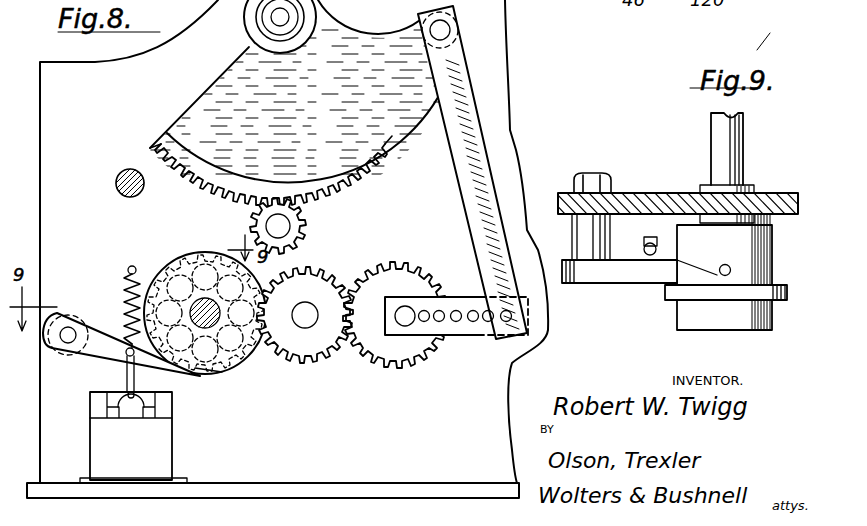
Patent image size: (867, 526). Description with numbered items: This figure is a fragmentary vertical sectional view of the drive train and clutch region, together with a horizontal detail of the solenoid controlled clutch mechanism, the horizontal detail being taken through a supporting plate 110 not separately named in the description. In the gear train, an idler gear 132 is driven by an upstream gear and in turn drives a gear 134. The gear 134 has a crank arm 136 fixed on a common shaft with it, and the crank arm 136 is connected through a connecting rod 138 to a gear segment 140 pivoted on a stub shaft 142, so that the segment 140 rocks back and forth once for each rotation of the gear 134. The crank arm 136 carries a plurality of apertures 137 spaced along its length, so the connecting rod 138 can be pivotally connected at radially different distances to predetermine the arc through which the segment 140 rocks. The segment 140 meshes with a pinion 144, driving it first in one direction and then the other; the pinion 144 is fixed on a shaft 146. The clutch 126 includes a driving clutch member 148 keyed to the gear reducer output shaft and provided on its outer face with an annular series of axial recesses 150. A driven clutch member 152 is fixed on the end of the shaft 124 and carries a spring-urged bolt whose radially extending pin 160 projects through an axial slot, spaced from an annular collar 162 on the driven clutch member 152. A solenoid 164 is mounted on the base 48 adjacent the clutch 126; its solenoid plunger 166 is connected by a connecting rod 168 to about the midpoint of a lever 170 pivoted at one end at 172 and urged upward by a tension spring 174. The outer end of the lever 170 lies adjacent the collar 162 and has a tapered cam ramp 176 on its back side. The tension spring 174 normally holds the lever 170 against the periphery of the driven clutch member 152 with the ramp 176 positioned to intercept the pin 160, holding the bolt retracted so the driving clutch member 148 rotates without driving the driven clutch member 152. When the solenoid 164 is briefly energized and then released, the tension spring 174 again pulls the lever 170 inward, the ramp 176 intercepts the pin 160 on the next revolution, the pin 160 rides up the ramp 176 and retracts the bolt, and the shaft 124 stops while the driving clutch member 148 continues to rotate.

In FIG. 8, the base 48 is at (282, 488).
In FIG. 9, the frame plate 110 is at (622, 158).
In FIG. 8, the shaft 124 is at (333, 261).
In FIG. 9, the shaft 124 is at (687, 140).
In FIG. 8, the clutch 126 is at (255, 370).
In FIG. 9, the clutch 126 is at (780, 262).
In FIG. 8, the idler gear 132 is at (377, 244).
In FIG. 8, the gear 134 is at (400, 421).
In FIG. 8, the crank arm 136 is at (456, 312).
In FIG. 8, the apertures 137 is at (488, 396).
In FIG. 8, the connecting rod 138 is at (567, 138).
In FIG. 8, the gear segment 140 is at (152, 105).
In FIG. 8, the stub shaft 142 is at (298, 82).
In FIG. 8, the pinion 144 is at (376, 220).
In FIG. 8, the shaft 146 is at (240, 227).
In FIG. 9, the driving clutch member 148 is at (628, 353).
In FIG. 8, the axial recesses 150 is at (185, 270).
In FIG. 9, the driven clutch member 152 is at (798, 174).
In FIG. 9, the pin 160 is at (725, 276).
In FIG. 8, the collar 162 is at (123, 232).
In FIG. 9, the collar 162 is at (760, 359).
In FIG. 8, the solenoid 164 is at (240, 463).
In FIG. 8, the solenoid plunger 166 is at (85, 447).
In FIG. 8, the connecting rod 168 is at (97, 377).
In FIG. 8, the lever 170 is at (118, 308).
In FIG. 9, the lever 170 is at (605, 330).
In FIG. 8, the pivot 172 is at (82, 288).
In FIG. 9, the pivot 172 is at (586, 328).
In FIG. 8, the tension spring 174 is at (96, 261).
In FIG. 9, the tension spring 174 is at (656, 236).
In FIG. 8, the cam ramp 176 is at (242, 419).
In FIG. 9, the cam ramp 176 is at (719, 263).